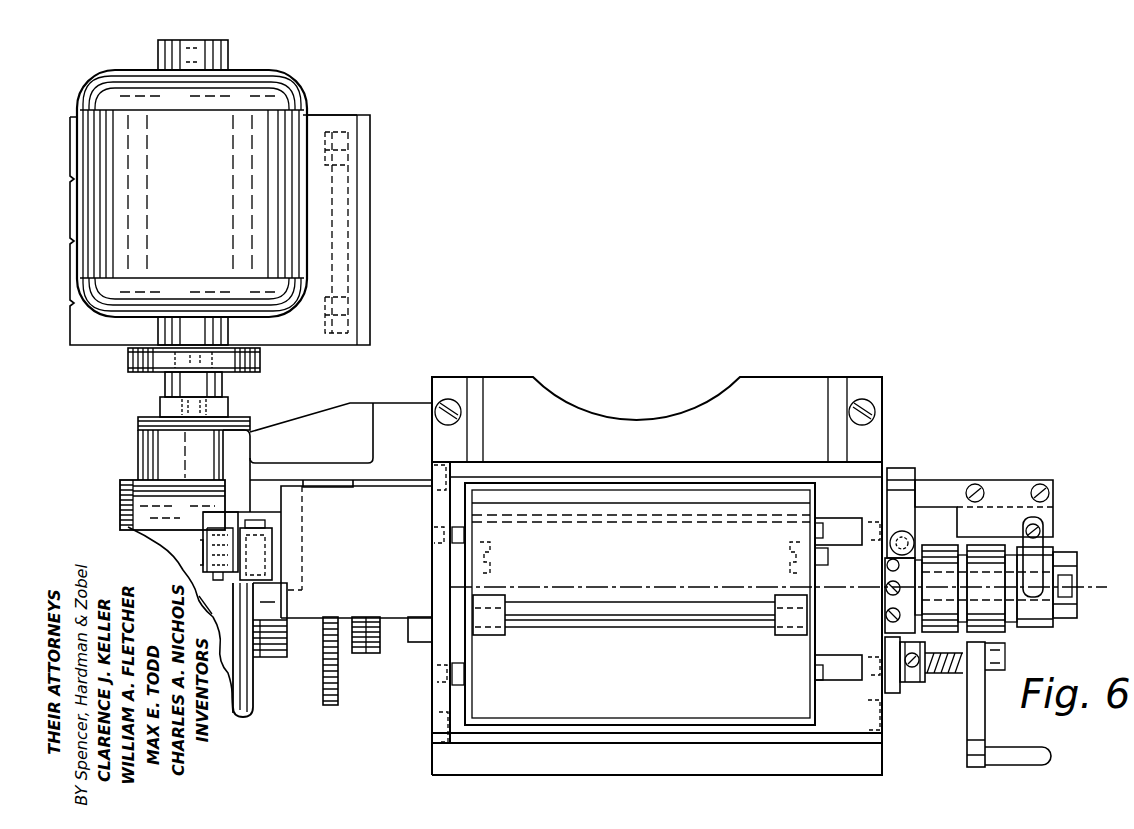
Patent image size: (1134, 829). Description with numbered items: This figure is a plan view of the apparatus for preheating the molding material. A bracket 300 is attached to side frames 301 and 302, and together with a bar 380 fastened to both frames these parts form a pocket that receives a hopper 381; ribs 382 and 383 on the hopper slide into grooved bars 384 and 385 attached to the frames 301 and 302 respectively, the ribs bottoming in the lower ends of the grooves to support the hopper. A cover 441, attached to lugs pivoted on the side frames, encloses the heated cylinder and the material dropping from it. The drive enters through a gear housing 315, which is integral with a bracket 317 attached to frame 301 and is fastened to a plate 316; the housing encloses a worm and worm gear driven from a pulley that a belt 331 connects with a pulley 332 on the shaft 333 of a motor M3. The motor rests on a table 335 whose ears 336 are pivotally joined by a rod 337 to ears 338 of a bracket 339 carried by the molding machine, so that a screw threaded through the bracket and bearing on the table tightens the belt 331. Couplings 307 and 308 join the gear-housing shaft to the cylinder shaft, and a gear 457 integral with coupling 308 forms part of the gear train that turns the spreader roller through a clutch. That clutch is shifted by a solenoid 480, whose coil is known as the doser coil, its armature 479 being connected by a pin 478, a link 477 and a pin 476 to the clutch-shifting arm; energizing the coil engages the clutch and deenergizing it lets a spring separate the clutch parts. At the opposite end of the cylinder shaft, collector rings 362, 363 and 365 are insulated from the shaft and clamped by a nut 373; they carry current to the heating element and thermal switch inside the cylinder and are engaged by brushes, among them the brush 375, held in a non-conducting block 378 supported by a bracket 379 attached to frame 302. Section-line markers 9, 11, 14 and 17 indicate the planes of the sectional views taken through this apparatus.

The motor M3 is at (290, 79).
The table 335 is at (344, 118).
The bracket 339 is at (372, 137).
The rod 337 is at (345, 215).
The ears 336 is at (338, 298).
The ears 338 is at (345, 336).
The belt 331 is at (262, 362).
The pulley 332 is at (228, 376).
The shaft 333 is at (168, 408).
The gear housing 315 is at (140, 451).
The plate 316 is at (119, 507).
The section line 9 is at (98, 480).
The section line 11 is at (432, 590).
The bracket 317 is at (358, 404).
The pin 478 is at (263, 522).
The armature 479 is at (290, 590).
The pin 476 is at (178, 569).
The link 477 is at (226, 595).
The gear 457 is at (322, 700).
The solenoid 480 is at (300, 619).
The coupling 308 is at (352, 655).
The coupling 307 is at (382, 644).
The bracket 300 is at (562, 397).
The section line 14 is at (639, 757).
The frame 301 is at (434, 558).
The grooved bar 384 is at (449, 522).
The rib 382 is at (470, 534).
The rib 383 is at (817, 531).
The grooved bar 385 is at (837, 521).
The section line 17 is at (1133, 487).
The hopper 381 is at (818, 709).
The bar 380 is at (587, 741).
The bracket 379 is at (943, 480).
The non-conducting block 378 is at (1030, 468).
The brush 375 is at (1036, 545).
The nut 373 is at (1057, 551).
The collector ring 362 is at (948, 598).
The ring 365 is at (1005, 631).
The collector ring 363 is at (1057, 631).
The frame 302 is at (896, 699).
The cover 441 is at (877, 752).